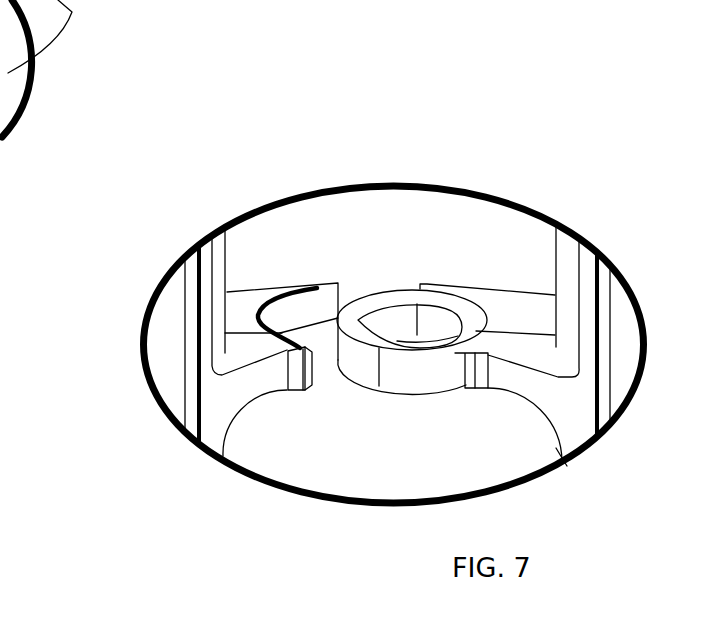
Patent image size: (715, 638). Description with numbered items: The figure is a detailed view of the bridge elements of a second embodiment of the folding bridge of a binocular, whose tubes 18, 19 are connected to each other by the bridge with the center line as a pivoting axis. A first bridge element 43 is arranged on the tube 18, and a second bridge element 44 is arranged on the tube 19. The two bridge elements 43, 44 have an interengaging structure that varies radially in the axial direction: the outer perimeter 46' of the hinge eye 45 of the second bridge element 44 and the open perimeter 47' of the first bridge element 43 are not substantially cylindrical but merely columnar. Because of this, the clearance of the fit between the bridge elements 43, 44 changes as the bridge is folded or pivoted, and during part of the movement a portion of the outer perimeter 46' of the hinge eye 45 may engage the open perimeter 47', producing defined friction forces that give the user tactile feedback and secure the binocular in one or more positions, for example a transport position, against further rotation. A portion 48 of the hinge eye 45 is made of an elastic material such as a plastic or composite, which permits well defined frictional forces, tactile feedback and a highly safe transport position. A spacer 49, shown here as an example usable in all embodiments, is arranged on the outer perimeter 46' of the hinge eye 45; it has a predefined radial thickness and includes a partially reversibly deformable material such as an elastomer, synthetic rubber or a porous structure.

The tube 18 is at (175, 335).
The tube 19 is at (623, 357).
The first bridge element 43 is at (242, 312).
The second bridge element 44 is at (517, 310).
The hinge eye 45 is at (453, 305).
The outer perimeter of hinge eye 46' is at (388, 474).
The open perimeter 47' is at (306, 204).
The portion of hinge eye 48 is at (395, 322).
The spacer 49 is at (375, 383).